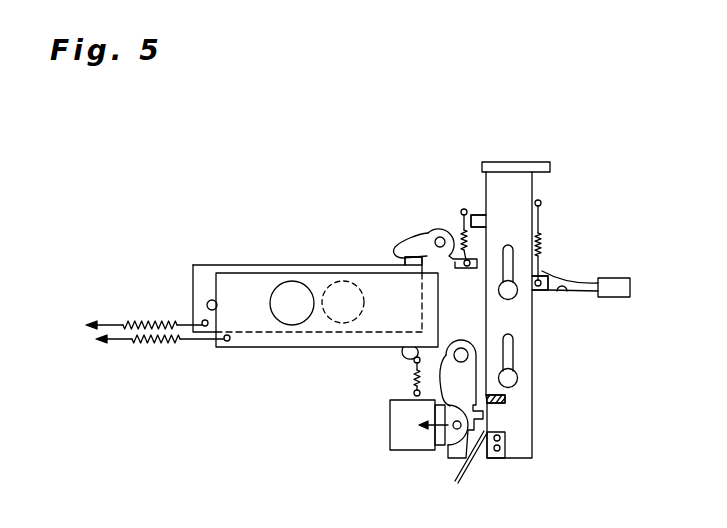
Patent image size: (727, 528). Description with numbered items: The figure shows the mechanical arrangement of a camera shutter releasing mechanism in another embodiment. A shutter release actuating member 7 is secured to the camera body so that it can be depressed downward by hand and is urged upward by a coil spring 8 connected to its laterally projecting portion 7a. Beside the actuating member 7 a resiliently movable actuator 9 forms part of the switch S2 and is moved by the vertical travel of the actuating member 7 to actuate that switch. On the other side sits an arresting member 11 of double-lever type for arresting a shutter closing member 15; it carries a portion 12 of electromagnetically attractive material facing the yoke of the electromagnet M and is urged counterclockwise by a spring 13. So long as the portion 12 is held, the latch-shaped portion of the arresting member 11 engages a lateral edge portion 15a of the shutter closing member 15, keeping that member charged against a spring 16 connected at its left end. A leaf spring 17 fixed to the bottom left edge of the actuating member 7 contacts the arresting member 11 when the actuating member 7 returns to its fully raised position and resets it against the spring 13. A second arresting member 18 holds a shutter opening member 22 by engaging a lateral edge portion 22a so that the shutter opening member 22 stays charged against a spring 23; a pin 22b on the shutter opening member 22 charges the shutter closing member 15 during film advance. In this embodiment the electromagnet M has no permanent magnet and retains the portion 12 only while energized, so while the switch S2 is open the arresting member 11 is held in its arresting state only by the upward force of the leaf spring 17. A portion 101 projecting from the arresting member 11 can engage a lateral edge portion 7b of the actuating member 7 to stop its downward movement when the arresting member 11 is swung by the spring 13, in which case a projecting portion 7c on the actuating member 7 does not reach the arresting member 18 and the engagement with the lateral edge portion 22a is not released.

The shutter release actuating member 7 is at (517, 183).
The laterally projecting portion 7a is at (545, 290).
The lateral edge portion 7b is at (481, 413).
The projecting portion 7c is at (478, 213).
The coil spring 8 is at (541, 222).
The resiliently movable actuator 9 is at (574, 278).
The switch S2 is at (594, 292).
The arresting member 11 is at (470, 358).
The portion of electromagnetically attractive material 12 is at (447, 452).
The spring 13 is at (462, 240).
The shutter closing member 15 is at (240, 280).
The lateral edge portion 15a is at (404, 352).
The spring 16 is at (152, 348).
The leaf spring 17 is at (459, 474).
The arresting member 18 is at (413, 246).
The shutter opening member 22 is at (290, 266).
The lateral edge portion 22a is at (398, 252).
The pin 22b is at (210, 300).
The spring 23 is at (147, 320).
The projecting portion 101 is at (498, 420).
The electromagnet M is at (393, 436).